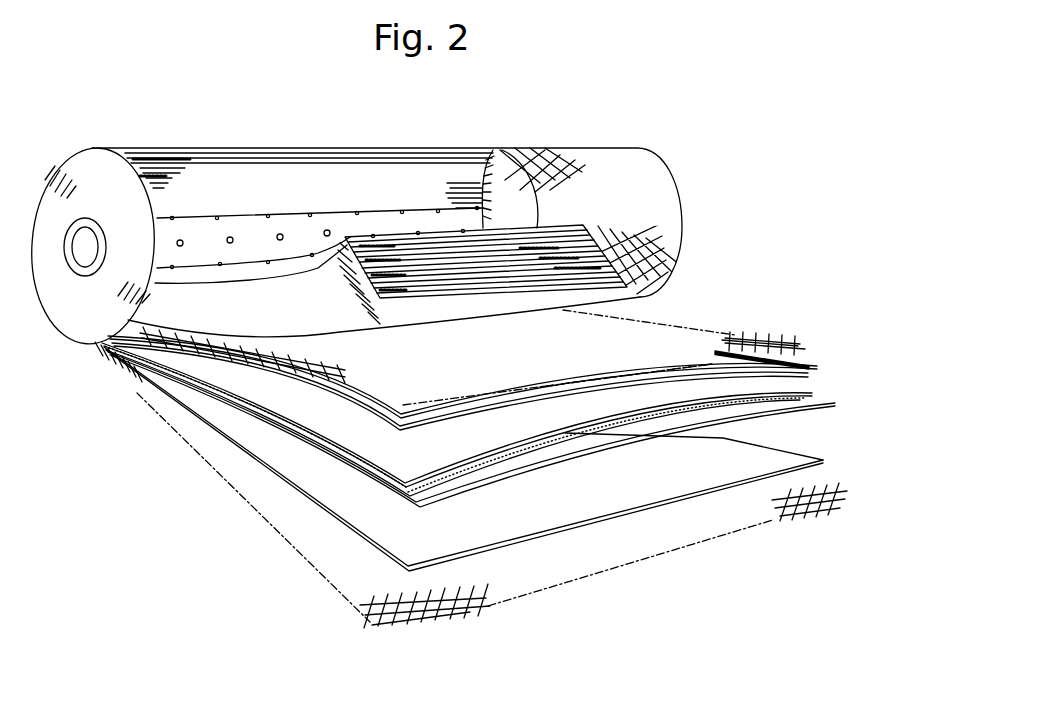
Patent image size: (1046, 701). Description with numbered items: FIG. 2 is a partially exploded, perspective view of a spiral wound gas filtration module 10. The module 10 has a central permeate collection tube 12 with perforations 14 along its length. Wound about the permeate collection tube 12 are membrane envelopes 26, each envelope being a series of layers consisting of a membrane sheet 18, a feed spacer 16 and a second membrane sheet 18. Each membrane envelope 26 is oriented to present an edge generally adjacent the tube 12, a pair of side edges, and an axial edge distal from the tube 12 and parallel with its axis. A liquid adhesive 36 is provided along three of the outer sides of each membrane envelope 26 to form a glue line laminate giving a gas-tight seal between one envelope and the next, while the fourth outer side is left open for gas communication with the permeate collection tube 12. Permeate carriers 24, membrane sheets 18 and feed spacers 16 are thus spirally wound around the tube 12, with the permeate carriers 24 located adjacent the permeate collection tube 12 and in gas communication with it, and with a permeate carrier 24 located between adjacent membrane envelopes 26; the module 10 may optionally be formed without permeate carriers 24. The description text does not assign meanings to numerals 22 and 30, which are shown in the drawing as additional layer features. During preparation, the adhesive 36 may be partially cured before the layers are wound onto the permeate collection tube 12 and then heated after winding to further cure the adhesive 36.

The spiral wound gas filtration module 10 is at (548, 149).
The central permeate collection tube 12 is at (203, 230).
The perforations 14 is at (280, 234).
The feed spacer 16 is at (587, 424).
The membrane sheet 18 is at (803, 367).
The coating layer 22 is at (810, 368).
The permeate carrier 24 is at (777, 337).
The membrane envelope 26 is at (170, 400).
The backing layer 30 is at (520, 479).
The liquid adhesive 36 is at (673, 380).